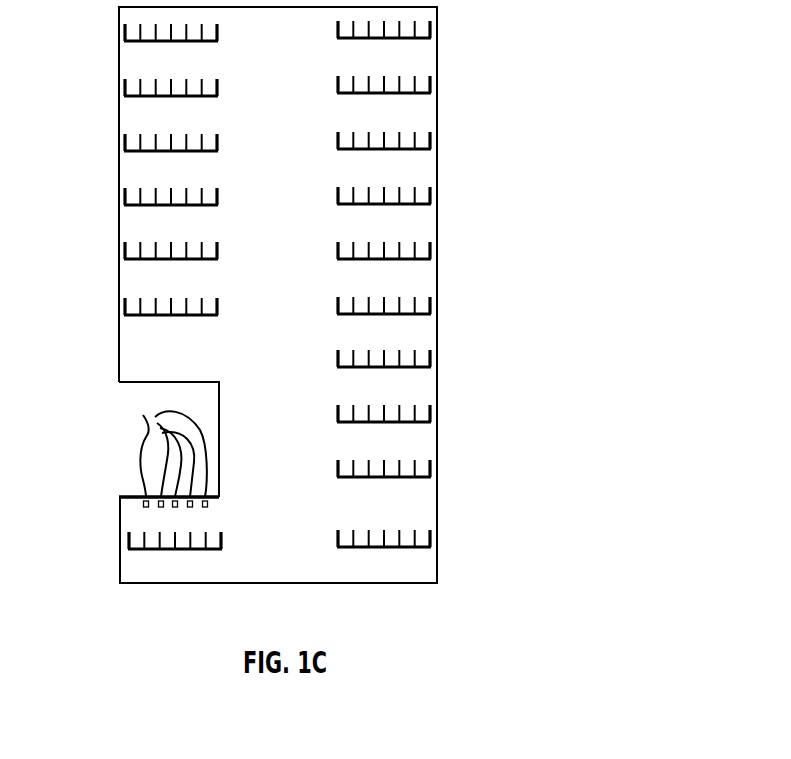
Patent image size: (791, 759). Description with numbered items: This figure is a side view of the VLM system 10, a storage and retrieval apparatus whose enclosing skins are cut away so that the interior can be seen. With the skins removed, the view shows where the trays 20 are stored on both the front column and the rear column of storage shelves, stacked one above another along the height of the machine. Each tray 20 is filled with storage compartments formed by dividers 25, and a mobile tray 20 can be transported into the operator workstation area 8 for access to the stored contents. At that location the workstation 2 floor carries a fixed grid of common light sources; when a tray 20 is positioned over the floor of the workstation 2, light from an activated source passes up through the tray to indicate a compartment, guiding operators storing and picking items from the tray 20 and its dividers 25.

The VLM system 10 is at (430, 224).
The tray 20 is at (422, 146).
The divider 25 is at (397, 83).
The workstation 2 is at (130, 495).
The operator workstation area 8 is at (129, 407).